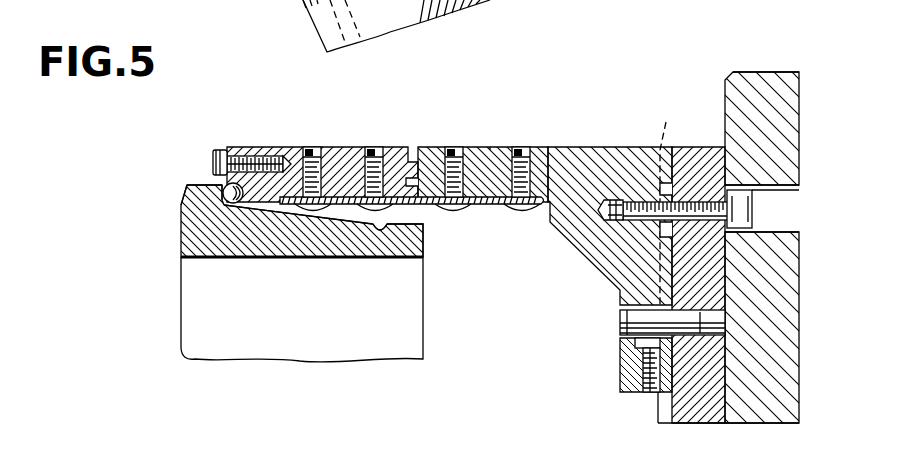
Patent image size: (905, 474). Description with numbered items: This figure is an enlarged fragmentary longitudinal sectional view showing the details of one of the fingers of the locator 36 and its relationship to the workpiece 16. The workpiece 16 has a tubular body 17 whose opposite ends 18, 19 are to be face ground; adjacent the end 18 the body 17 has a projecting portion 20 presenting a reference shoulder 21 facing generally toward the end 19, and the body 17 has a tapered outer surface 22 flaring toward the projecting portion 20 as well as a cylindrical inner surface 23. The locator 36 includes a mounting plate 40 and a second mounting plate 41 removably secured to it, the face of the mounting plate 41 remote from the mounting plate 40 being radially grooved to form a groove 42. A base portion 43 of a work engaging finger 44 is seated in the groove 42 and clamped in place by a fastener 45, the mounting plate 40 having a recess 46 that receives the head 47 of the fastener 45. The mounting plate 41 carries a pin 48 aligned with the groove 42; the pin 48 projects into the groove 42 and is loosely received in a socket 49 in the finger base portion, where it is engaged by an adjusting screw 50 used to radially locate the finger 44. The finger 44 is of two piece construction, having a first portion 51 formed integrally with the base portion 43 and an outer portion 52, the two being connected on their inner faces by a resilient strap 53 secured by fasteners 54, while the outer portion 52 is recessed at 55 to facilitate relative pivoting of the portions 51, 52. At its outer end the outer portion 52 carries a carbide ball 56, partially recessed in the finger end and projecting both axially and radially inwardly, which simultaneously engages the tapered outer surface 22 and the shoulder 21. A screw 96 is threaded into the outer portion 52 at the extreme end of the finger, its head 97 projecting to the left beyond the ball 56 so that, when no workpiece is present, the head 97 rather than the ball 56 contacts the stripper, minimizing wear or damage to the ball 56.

The workpiece 16 is at (181, 318).
The tubular body 17 is at (288, 243).
The end 18 is at (181, 232).
The end 19 is at (423, 245).
The projecting portion 20 is at (200, 203).
The reference shoulder 21 is at (228, 205).
The tapered outer surface 22 is at (370, 225).
The cylindrical inner surface 23 is at (240, 258).
The locator 36 is at (712, 72).
The mounting plate 40 is at (765, 72).
The second mounting plate 41 is at (700, 147).
The groove 42 is at (653, 202).
The base portion 43 is at (600, 250).
The work engaging finger 44 is at (428, 147).
The fastener 45 is at (633, 195).
The recess 46 is at (800, 215).
The head 47 is at (740, 205).
The pin 48 is at (687, 313).
The socket 49 is at (620, 310).
The adjusting screw 50 is at (642, 393).
The first portion 51 is at (490, 147).
The outer portion 52 is at (347, 147).
The resilient strap 53 is at (492, 205).
The fasteners 54 is at (317, 218).
The recess 55 is at (406, 147).
The ball 56 is at (228, 188).
The screw 96 is at (246, 156).
The head 97 is at (220, 150).